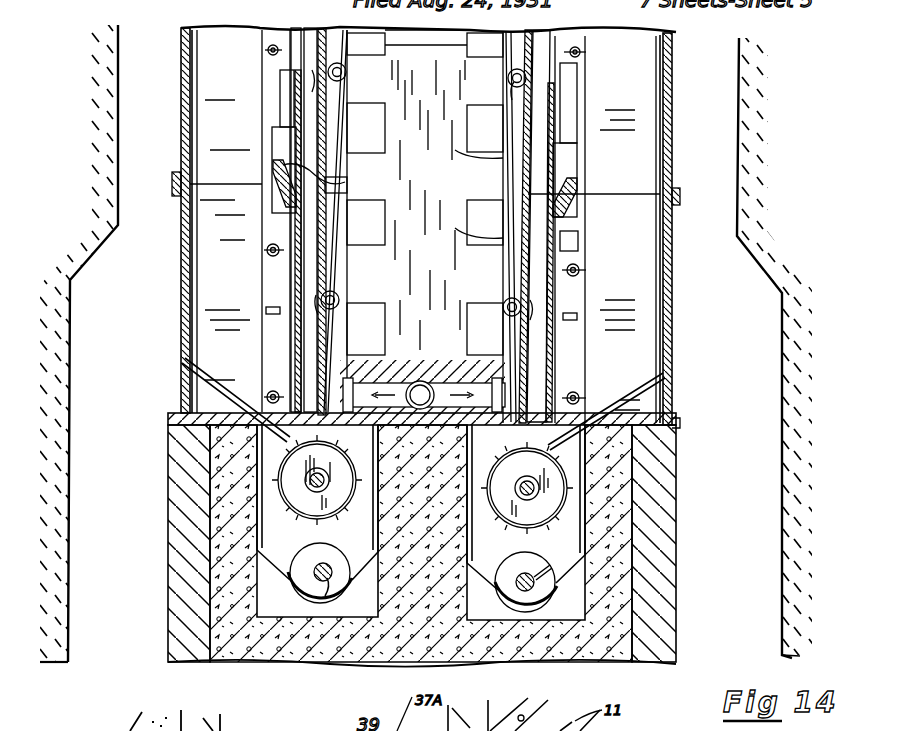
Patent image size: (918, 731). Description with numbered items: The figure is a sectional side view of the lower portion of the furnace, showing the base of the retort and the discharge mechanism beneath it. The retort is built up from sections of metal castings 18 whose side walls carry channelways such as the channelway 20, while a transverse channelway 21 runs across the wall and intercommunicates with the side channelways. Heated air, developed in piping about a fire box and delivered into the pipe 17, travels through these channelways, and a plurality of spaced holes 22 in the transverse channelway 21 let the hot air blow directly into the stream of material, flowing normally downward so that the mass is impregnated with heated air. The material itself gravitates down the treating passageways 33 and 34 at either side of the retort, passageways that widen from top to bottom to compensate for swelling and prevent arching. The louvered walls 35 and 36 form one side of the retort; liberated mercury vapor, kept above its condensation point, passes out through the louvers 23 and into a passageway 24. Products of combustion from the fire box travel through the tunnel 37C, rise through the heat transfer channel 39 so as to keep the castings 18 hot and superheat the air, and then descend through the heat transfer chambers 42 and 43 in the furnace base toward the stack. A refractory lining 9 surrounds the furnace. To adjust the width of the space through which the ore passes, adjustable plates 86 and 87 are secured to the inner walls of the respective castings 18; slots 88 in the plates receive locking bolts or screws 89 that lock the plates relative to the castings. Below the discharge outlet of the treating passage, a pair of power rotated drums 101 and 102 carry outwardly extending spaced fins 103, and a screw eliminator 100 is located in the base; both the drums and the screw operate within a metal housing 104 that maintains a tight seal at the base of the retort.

The refractory lining 9 is at (113, 137).
The pipe 17 is at (450, 385).
The metal castings 18 is at (215, 73).
The channelway 20 is at (346, 105).
The transverse channelway 21 is at (346, 78).
The spaced holes 22 is at (350, 128).
The louvers 23 is at (272, 190).
The passageway 24 is at (205, 275).
The treating passageway 33 is at (470, 233).
The treating passageway 34 is at (322, 262).
The louvered wall 35 is at (350, 183).
The louvered wall 36 is at (523, 293).
The block 37C is at (357, 212).
The heat transfer channel 39 is at (507, 150).
The heat transfer chamber 42 is at (726, 630).
The heat transfer chamber 43 is at (110, 638).
The adjustable plate 86 is at (580, 255).
The adjustable plate 87 is at (268, 292).
The slots 88 is at (582, 400).
The locking bolts or screws 89 is at (580, 275).
The screw eliminator 100 is at (322, 560).
The power rotated drum 101 is at (318, 528).
The power rotated drum 102 is at (545, 528).
The spaced fins 103 is at (522, 530).
The metal housing 104 is at (297, 585).